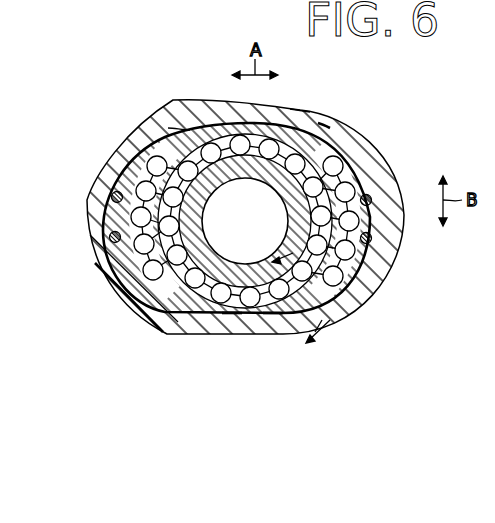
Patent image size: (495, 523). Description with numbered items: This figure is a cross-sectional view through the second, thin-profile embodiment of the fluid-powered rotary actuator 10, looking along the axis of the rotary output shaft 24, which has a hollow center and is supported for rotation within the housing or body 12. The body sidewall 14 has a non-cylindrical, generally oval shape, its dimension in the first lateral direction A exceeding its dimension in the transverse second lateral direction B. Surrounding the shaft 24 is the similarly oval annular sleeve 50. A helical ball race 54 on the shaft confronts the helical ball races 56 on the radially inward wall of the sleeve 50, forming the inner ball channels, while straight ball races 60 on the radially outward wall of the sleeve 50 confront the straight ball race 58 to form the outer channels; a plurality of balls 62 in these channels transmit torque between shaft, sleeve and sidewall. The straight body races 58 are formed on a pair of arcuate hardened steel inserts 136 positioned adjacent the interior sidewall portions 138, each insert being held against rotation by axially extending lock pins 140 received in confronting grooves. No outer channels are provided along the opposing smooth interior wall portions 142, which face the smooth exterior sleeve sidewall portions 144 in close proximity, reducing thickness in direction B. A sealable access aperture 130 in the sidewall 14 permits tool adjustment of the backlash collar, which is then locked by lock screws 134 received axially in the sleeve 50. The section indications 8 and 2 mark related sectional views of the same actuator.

The fluid-powered rotary actuator 10 is at (428, 109).
The housing or body 12 is at (253, 110).
The sidewall 14 is at (300, 113).
The rotary output shaft 24 is at (286, 205).
The annular sleeve 50 is at (358, 290).
The helical ball race 54 is at (243, 140).
The helical ball races 56 is at (211, 145).
The straight ball race 58 is at (148, 182).
The straight ball races 60 is at (158, 160).
The balls 62 is at (136, 181).
The sealable access aperture 130 is at (175, 125).
The lock screws 134 is at (273, 317).
The inserts 136 is at (130, 267).
The interior sidewall portions 138 is at (110, 234).
The lock pins 140 is at (111, 197).
The wall portions 142 is at (163, 333).
The exterior sidewall portions 144 is at (232, 315).
The section line 8 is at (304, 292).
The figure reference 2 is at (3, 354).